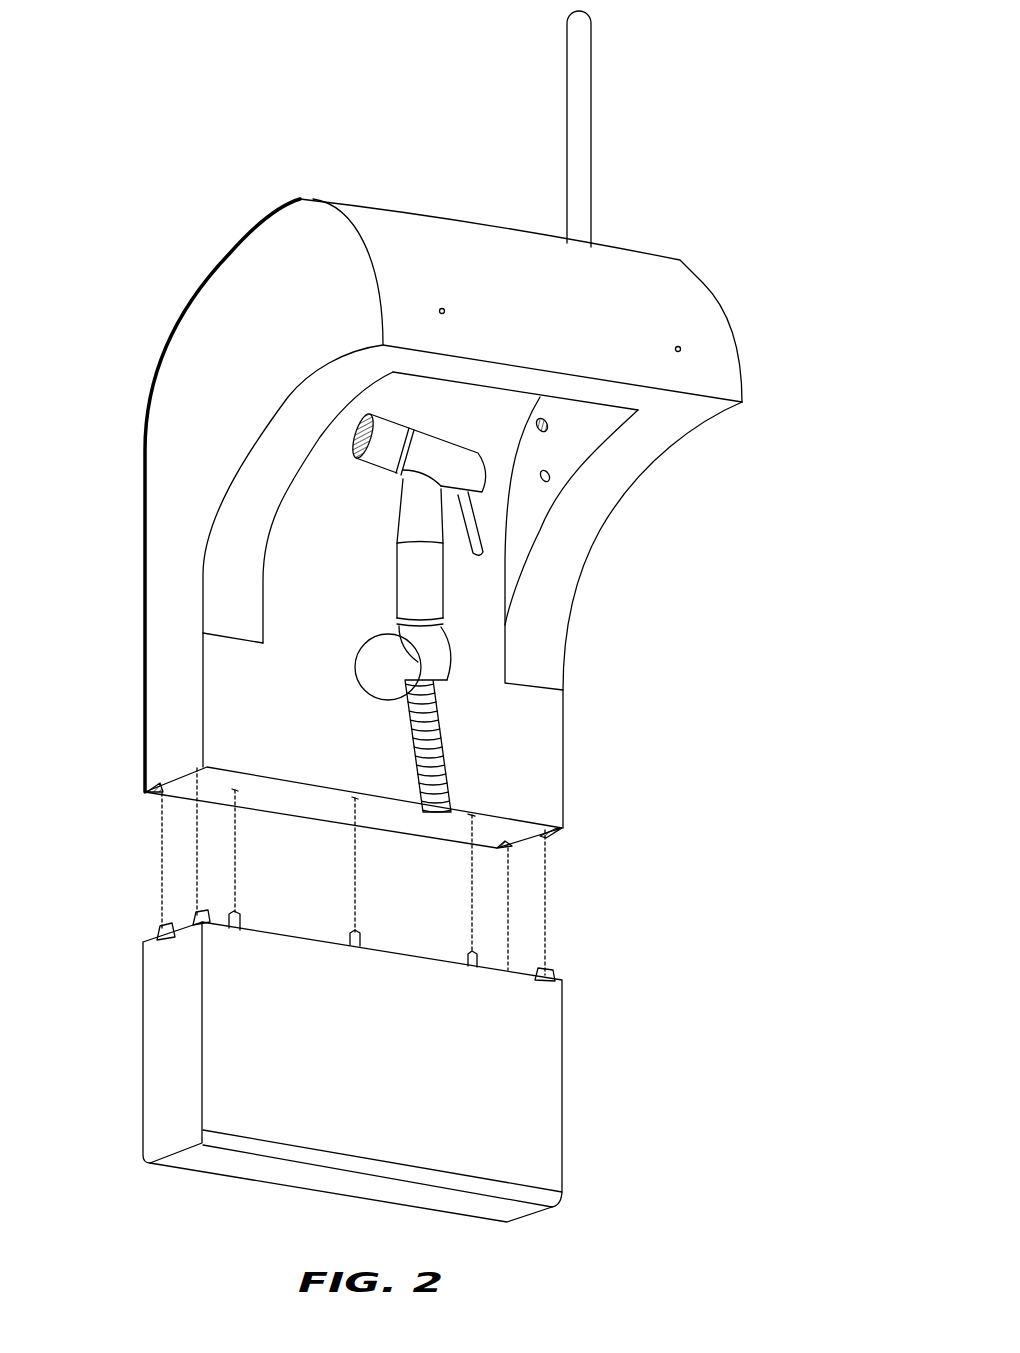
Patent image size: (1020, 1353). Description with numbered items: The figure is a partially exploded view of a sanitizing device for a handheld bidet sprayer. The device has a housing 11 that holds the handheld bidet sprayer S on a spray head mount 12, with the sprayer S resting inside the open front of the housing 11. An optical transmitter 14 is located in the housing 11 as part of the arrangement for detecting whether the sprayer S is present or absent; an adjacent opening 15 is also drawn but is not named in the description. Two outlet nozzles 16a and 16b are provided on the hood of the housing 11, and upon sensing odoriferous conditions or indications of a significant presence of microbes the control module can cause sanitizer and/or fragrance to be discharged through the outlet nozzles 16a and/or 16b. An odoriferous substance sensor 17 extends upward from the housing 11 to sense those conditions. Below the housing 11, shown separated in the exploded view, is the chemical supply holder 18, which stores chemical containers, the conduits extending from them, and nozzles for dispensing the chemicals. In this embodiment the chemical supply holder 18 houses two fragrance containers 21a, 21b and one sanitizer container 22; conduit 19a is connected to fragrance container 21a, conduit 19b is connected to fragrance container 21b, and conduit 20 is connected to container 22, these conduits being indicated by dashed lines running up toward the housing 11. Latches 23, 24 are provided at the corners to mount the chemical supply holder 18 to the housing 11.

The housing 11 is at (202, 347).
The spray head mount 12 is at (377, 663).
The optical transmitter 14 is at (547, 481).
The hole 15 is at (545, 431).
The outlet nozzle 16a is at (442, 307).
The outlet nozzle 16b is at (681, 350).
The odoriferous substance sensor 17 is at (601, 88).
The chemical supply holder 18 is at (520, 1082).
The conduit 19a is at (235, 790).
The conduit 19b is at (471, 830).
The conduit 20 is at (357, 797).
The fragrance container 21a is at (236, 916).
The fragrance container 21b is at (470, 953).
The sanitizer container 22 is at (357, 932).
The latch 23 is at (147, 794).
The latch 24 is at (165, 928).
The handheld bidet sprayer S is at (422, 585).